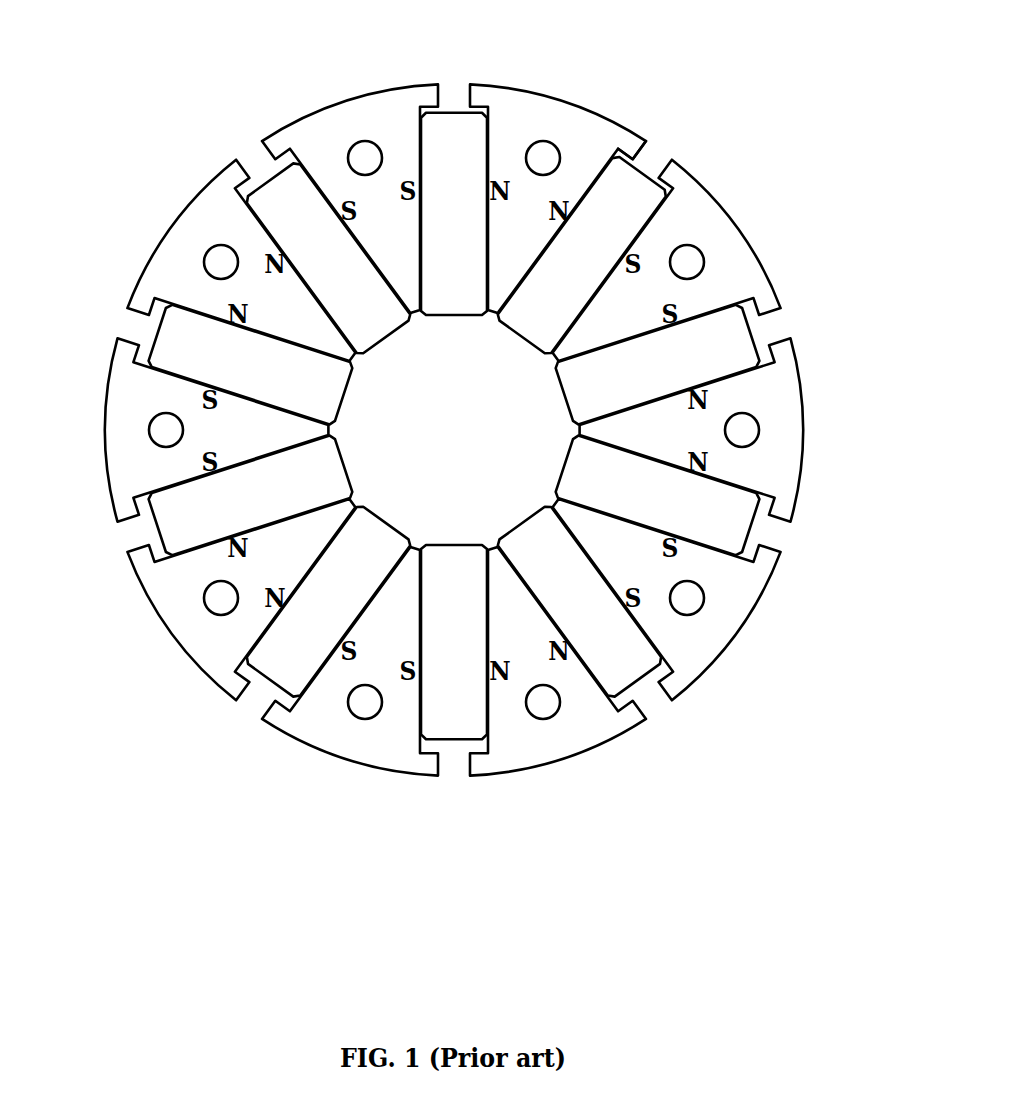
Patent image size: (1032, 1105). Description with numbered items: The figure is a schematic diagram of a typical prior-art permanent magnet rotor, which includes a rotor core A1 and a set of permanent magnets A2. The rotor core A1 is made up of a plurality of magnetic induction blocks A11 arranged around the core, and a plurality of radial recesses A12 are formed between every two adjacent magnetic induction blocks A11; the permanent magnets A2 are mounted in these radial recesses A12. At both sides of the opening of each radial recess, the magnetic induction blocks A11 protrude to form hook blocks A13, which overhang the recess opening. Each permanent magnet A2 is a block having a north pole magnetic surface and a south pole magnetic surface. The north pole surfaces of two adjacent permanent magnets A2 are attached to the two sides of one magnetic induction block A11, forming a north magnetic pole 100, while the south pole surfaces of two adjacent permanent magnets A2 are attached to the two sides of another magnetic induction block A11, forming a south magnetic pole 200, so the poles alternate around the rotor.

The rotor core A1 is at (173, 268).
The permanent magnets A2 is at (167, 337).
The magnetic induction blocks A11 is at (703, 222).
The radial recesses A12 is at (647, 167).
The hook blocks A13 is at (638, 138).
The north magnetic pole 100 is at (780, 408).
The south magnetic pole 200 is at (712, 633).